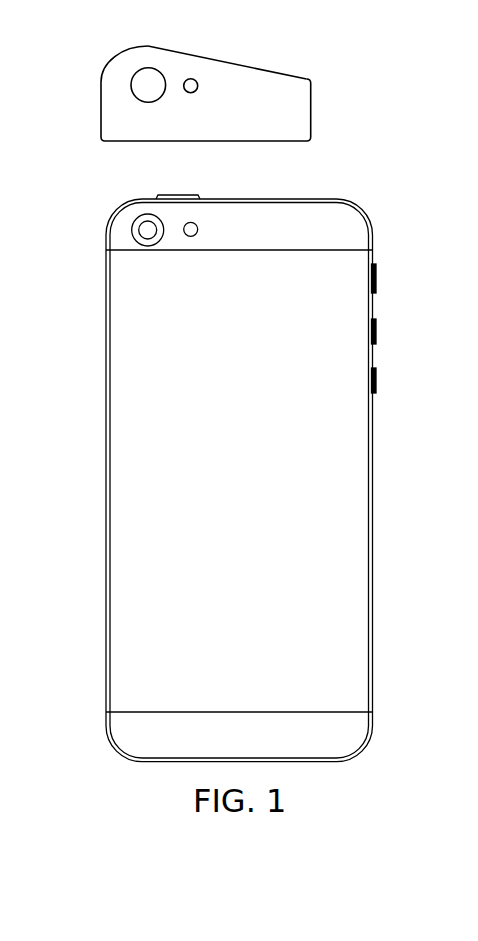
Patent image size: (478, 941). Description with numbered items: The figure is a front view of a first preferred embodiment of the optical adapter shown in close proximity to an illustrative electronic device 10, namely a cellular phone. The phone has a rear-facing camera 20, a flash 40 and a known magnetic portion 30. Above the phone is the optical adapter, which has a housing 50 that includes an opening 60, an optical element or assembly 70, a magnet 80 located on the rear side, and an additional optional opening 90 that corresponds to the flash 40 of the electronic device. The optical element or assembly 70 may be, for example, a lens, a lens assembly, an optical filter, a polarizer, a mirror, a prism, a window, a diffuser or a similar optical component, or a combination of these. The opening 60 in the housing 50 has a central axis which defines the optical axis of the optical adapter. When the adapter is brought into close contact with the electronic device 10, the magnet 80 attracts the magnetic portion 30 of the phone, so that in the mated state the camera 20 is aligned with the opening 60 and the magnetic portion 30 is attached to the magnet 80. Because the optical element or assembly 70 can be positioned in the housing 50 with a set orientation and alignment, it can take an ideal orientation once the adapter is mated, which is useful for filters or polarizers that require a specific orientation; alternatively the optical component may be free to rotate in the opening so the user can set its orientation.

The electronic device 10 is at (348, 495).
The camera 20 is at (132, 237).
The magnetic portion 30 is at (257, 263).
The flash 40 is at (191, 222).
The housing 50 is at (312, 110).
The opening 60 is at (132, 77).
The optical element or assembly 70 is at (148, 85).
The magnet 80 is at (235, 97).
The additional optional opening 90 is at (191, 79).